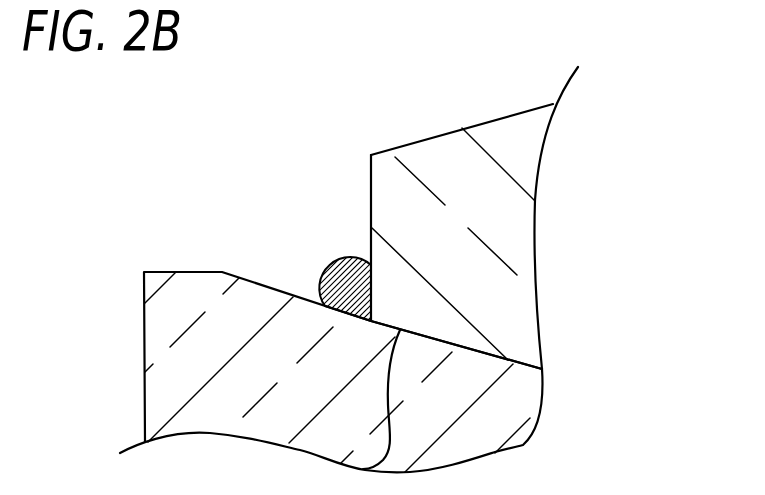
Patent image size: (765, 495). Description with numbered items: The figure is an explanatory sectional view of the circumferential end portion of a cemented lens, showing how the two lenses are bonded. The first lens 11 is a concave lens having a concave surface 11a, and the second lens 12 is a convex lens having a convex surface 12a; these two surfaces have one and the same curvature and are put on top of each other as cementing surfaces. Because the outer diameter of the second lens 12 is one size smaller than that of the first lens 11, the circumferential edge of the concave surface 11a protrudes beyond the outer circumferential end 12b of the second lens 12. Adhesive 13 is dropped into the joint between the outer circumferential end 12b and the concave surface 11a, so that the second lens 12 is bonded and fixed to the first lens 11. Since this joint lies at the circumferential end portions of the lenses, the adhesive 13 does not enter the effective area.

The first lens 11 is at (192, 260).
The concave surface 11a is at (360, 468).
The second lens 12 is at (468, 110).
The convex surface 12a is at (480, 356).
The outer circumferential end 12b is at (371, 192).
The adhesive 13 is at (338, 260).